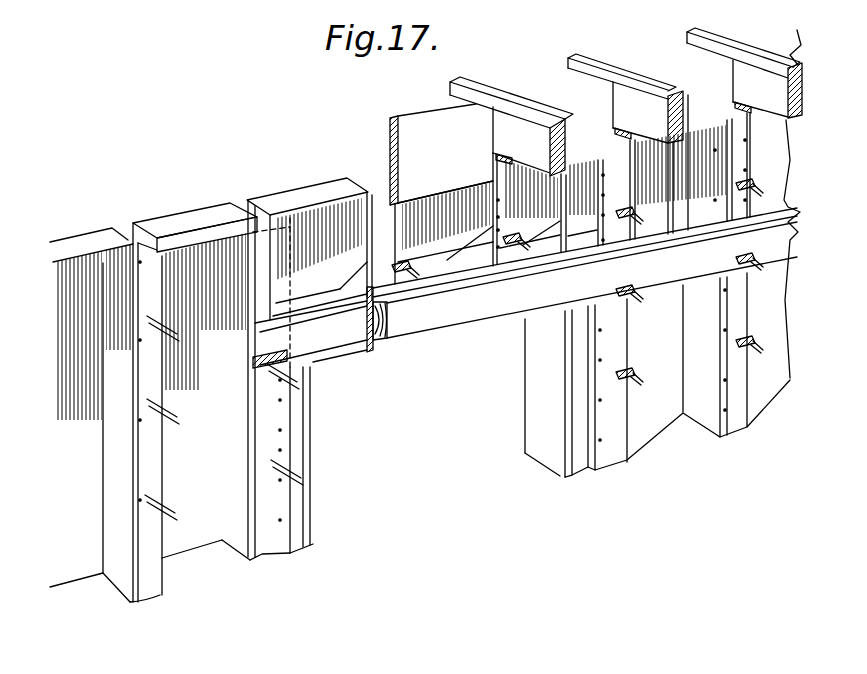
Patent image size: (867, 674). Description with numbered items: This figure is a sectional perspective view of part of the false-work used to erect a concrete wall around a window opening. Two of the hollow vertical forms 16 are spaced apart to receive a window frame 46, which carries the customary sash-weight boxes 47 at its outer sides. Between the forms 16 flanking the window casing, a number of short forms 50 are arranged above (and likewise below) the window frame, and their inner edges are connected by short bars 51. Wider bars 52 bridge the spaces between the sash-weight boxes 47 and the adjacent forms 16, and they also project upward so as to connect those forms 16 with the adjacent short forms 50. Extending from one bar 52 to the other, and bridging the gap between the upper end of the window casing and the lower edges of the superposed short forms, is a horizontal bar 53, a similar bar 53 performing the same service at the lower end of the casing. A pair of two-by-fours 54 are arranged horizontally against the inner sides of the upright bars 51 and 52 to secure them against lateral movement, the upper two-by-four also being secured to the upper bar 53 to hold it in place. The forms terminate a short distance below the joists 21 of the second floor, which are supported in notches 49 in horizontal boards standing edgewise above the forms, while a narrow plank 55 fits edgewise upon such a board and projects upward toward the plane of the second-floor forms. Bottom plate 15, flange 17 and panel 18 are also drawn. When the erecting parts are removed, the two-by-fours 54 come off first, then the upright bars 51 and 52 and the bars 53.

The bottom plate 15 is at (157, 598).
The form 16 is at (81, 241).
The stud flange 17 is at (292, 526).
The bracing panel 18 is at (405, 131).
The joist 21 is at (567, 70).
The window frame 46 is at (307, 489).
The sash-weight box 47 is at (474, 522).
The notch 49 is at (497, 136).
The short form 50 is at (303, 190).
The short bar 51 is at (652, 357).
The bar 52 is at (275, 553).
The horizontal bar 53 is at (387, 339).
The 2x4 54 is at (450, 308).
The narrow plank 55 is at (148, 410).